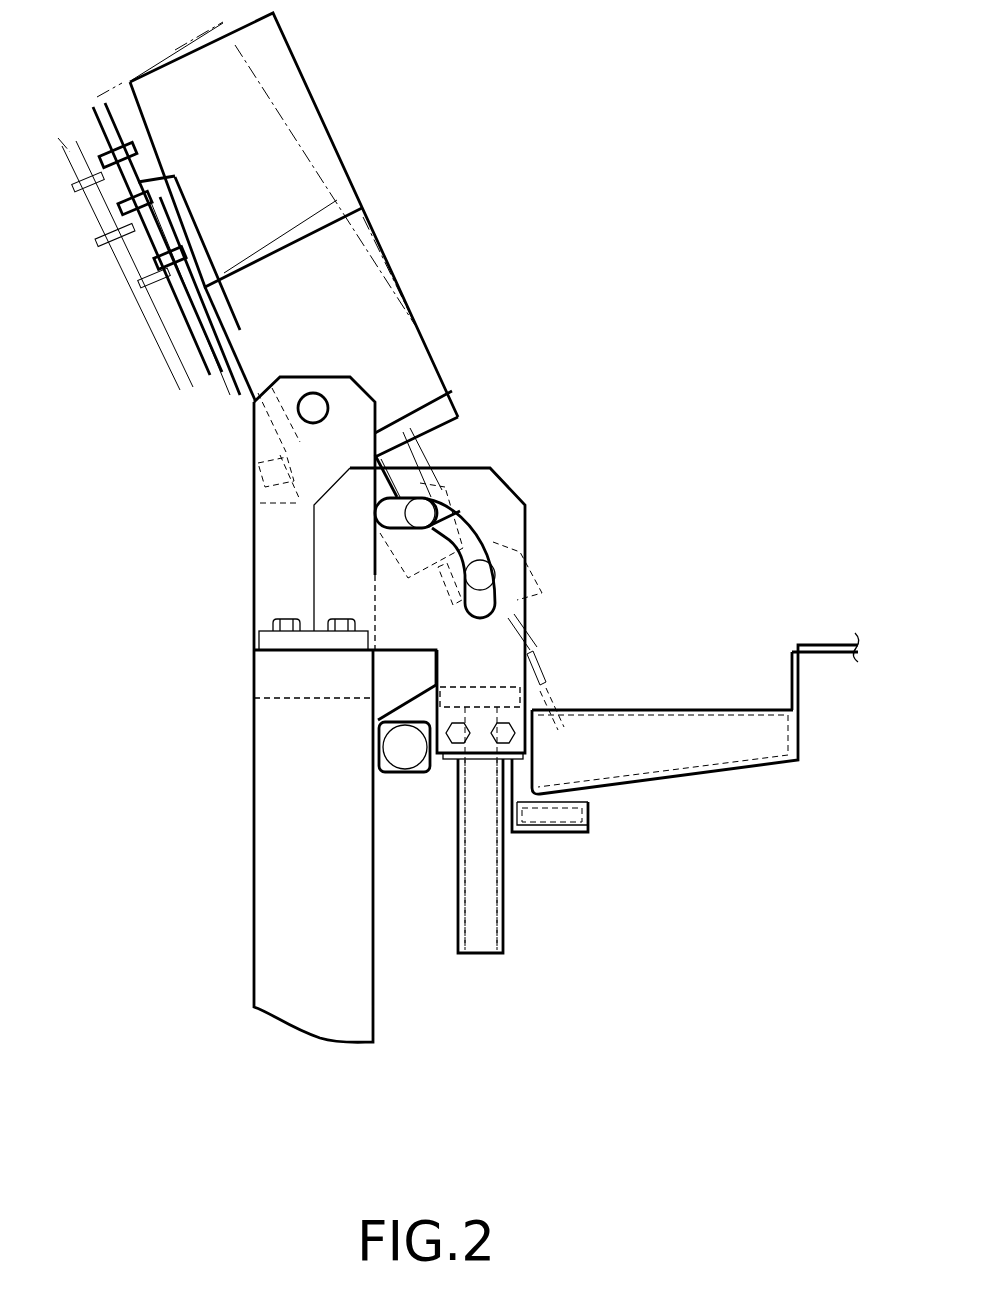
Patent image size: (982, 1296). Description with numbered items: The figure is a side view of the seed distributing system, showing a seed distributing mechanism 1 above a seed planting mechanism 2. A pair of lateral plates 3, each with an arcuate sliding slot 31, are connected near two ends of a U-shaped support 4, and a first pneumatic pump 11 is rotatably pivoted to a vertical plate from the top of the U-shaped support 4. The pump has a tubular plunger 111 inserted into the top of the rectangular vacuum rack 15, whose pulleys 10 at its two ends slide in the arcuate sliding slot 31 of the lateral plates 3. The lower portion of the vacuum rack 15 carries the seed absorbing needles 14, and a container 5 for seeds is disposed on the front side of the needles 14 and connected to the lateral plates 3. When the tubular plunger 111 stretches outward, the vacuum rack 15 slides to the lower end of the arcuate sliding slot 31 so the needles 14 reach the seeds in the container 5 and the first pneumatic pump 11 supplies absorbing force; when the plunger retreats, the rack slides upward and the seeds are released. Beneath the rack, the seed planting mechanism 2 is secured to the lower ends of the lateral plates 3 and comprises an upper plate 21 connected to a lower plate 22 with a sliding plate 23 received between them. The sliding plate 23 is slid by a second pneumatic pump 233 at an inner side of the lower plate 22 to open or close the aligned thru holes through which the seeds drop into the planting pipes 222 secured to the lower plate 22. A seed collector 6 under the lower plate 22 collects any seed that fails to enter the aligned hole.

The seed distributing mechanism 1 is at (551, 324).
The first pneumatic pump 11 is at (307, 103).
The tubular plunger 111 is at (375, 458).
The pulleys 10 is at (415, 513).
The vacuum rack 15 is at (443, 485).
The lateral plates 3 is at (497, 468).
The arcuate sliding slot 31 is at (480, 533).
The seed planting mechanism 2 is at (505, 665).
The upper plate 21 is at (505, 670).
The sliding plate 23 is at (550, 690).
The second pneumatic pump 233 is at (403, 745).
The lower plate 22 is at (443, 753).
The planting pipes 222 is at (497, 877).
The seed absorbing needles 14 is at (483, 657).
The U-shaped support 4 is at (270, 828).
The container 5 is at (728, 710).
The seed collector 6 is at (588, 813).